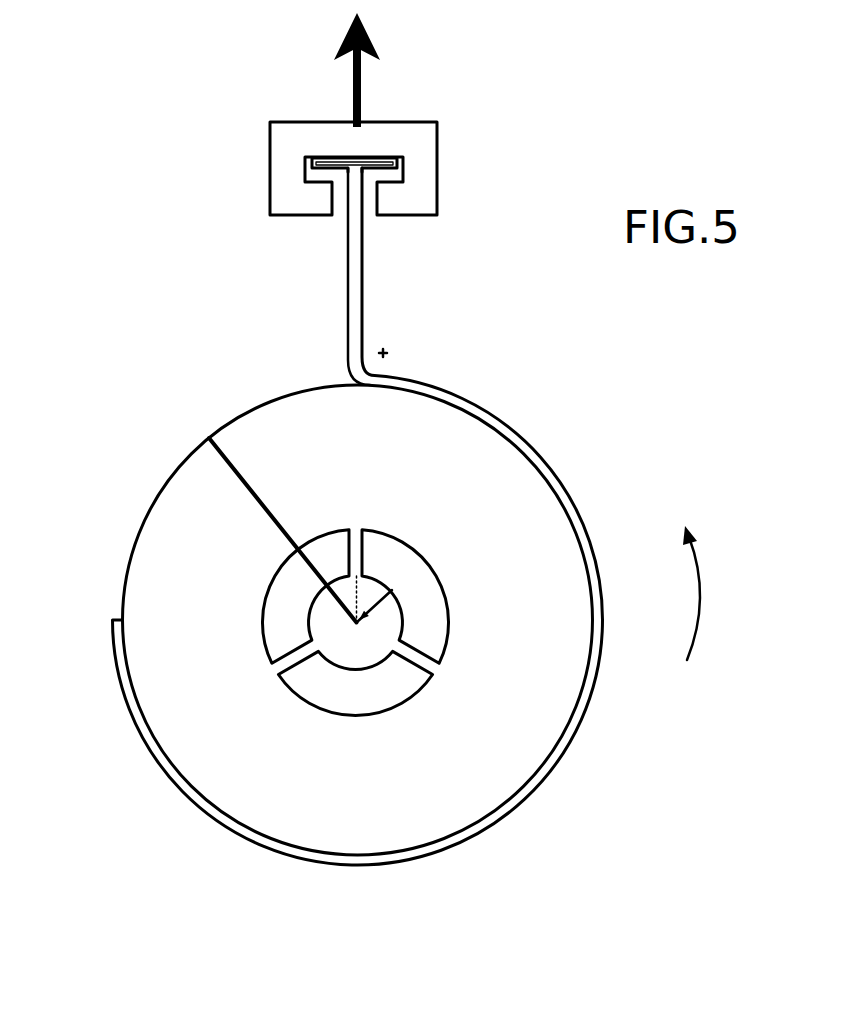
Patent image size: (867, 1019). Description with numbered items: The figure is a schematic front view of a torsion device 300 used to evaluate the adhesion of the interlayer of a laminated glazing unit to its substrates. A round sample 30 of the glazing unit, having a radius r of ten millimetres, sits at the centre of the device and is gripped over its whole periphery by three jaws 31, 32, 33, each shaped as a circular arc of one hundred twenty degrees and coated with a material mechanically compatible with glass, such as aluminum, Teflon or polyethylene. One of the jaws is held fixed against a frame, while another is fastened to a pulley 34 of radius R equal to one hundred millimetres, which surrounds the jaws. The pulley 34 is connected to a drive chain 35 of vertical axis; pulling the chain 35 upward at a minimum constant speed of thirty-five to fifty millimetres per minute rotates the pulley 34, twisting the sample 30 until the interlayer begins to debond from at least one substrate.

The torsion device 300 is at (97, 347).
The round sample 30 is at (357, 652).
The jaw 31 is at (285, 600).
The jaw 32 is at (427, 603).
The jaw 33 is at (347, 687).
The pulley 34 is at (140, 525).
The drive chain 35 is at (358, 255).